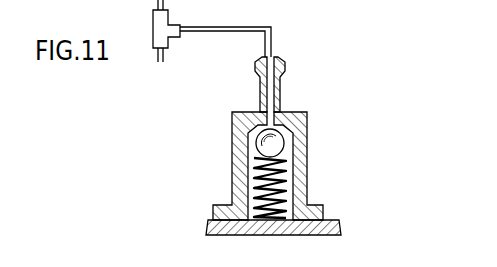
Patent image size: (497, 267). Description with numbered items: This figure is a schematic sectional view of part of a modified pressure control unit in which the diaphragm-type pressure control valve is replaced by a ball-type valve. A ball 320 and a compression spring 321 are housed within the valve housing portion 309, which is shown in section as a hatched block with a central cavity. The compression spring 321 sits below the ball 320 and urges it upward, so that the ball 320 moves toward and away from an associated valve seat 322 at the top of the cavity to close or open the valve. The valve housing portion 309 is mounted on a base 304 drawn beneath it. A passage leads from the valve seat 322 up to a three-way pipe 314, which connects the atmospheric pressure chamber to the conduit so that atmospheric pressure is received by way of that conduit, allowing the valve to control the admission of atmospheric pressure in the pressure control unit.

The three-way pipe 314 is at (172, 25).
The valve seat 322 is at (283, 112).
The valve housing portion 309 is at (327, 163).
The base plate 304 is at (343, 208).
The ball 320 is at (284, 146).
The compression spring 321 is at (255, 175).